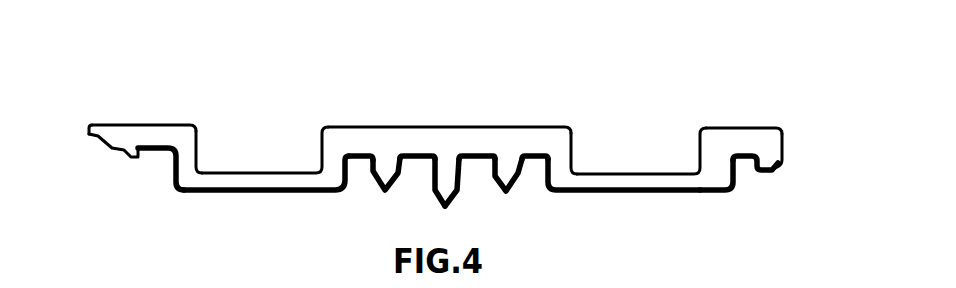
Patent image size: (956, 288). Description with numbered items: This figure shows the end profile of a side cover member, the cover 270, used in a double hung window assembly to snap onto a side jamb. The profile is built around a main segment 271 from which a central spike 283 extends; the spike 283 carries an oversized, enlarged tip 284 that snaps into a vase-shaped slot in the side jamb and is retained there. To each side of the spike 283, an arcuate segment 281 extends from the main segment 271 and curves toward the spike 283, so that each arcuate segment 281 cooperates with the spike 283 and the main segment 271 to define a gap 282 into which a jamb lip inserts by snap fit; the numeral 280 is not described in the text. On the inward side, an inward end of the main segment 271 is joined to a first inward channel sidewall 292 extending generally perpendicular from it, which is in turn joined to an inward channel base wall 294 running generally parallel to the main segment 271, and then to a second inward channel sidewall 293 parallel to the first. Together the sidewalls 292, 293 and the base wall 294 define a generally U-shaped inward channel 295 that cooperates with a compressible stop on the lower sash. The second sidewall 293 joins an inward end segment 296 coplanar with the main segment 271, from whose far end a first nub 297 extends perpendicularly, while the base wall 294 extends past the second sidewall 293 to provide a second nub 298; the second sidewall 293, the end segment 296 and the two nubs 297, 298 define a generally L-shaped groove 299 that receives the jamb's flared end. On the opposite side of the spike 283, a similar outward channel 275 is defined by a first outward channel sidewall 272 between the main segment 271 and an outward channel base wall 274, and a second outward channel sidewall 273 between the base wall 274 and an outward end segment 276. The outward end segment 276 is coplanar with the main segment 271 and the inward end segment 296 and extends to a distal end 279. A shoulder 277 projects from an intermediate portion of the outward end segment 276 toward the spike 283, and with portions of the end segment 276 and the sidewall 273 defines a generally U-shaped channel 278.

The cover 270 is at (495, 87).
The main segment 271 is at (452, 127).
The first outward channel sidewall 272 is at (323, 150).
The second outward channel sidewall 273 is at (198, 143).
The outward channel base wall 274 is at (282, 189).
The outward channel 275 is at (244, 153).
The outward end segment 276 is at (139, 124).
The shoulder 277 is at (125, 158).
The U-shaped channel 278 is at (157, 155).
The distal end 279 is at (89, 134).
The shoulder 280 is at (357, 152).
The arcuate segment 281 is at (391, 178).
The gap 282 is at (413, 158).
The spike 283 is at (456, 176).
The enlarged tip 284 is at (445, 207).
The first inward channel sidewall 292 is at (569, 155).
The second inward channel sidewall 293 is at (708, 157).
The inward channel base wall 294 is at (642, 190).
The inward channel 295 is at (640, 137).
The inward end segment 296 is at (740, 136).
The first nub 297 is at (783, 165).
The second nub 298 is at (733, 194).
The L-shaped groove 299 is at (742, 163).